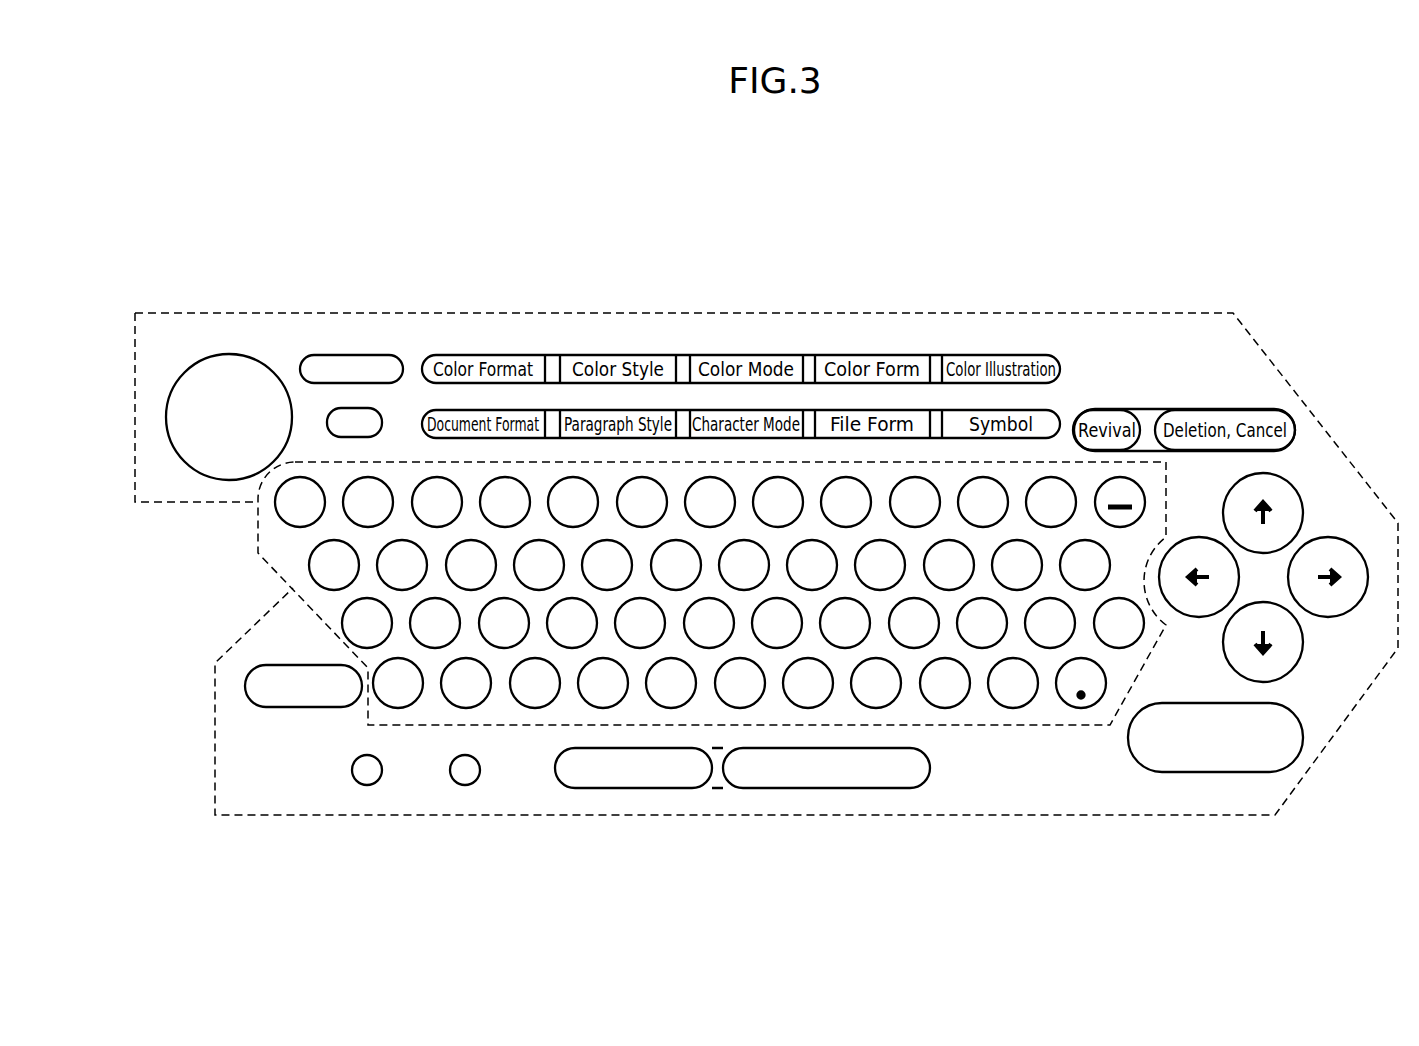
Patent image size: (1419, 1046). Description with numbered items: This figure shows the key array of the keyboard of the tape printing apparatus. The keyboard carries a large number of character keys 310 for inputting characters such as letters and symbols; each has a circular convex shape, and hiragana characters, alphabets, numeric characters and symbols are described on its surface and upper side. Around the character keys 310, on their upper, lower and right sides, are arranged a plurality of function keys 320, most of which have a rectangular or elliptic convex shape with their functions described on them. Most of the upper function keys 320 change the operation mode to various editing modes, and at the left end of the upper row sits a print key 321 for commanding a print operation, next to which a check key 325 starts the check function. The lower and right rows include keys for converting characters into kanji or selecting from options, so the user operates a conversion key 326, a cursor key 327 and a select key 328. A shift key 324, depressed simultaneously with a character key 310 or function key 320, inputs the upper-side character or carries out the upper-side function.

The character keys 310 is at (264, 555).
The function keys 320 is at (800, 313).
The print key 321 is at (230, 355).
The shift key 324 is at (275, 707).
The check key 325 is at (370, 355).
The conversion key 326 is at (722, 788).
The cursor key 327 is at (1263, 603).
The select key 328 is at (1183, 772).